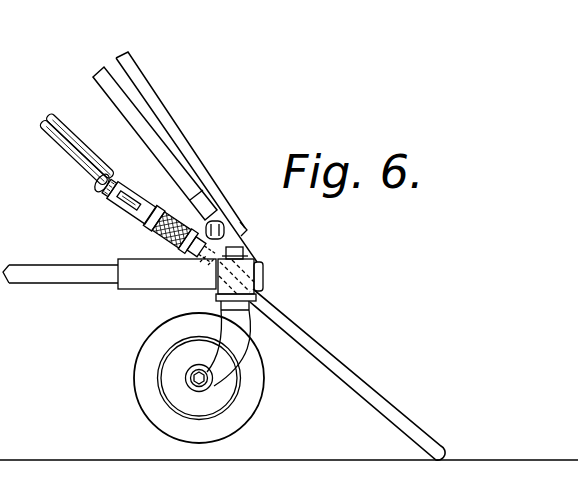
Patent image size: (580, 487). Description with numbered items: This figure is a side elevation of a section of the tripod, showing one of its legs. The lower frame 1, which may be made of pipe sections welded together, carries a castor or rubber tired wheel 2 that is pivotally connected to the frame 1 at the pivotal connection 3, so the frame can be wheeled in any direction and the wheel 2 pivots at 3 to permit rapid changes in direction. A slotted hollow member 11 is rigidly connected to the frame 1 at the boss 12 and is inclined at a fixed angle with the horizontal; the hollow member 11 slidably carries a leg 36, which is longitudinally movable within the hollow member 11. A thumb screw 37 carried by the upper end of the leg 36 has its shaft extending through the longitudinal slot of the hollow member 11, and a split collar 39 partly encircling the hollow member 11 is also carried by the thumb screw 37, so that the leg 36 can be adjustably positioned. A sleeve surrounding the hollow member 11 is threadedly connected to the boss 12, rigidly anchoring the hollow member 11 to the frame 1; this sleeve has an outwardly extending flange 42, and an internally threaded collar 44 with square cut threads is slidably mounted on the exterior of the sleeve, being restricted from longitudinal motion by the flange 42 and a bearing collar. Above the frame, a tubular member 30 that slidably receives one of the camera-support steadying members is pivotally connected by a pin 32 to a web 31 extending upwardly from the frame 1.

The lower frame 1 is at (33, 284).
The castors or rubber tired wheels 2 is at (142, 348).
The pivotal connection 3 is at (246, 250).
The hollow member 11 is at (57, 139).
The boss 12 is at (197, 258).
The tubular members 30 is at (158, 112).
The web 31 is at (232, 241).
The pin 32 is at (222, 226).
The leg 36 is at (288, 325).
The thumb screw 37 is at (98, 187).
The split collar 39 is at (127, 168).
The flange 42 is at (168, 190).
The internally threaded collar 44 is at (167, 236).